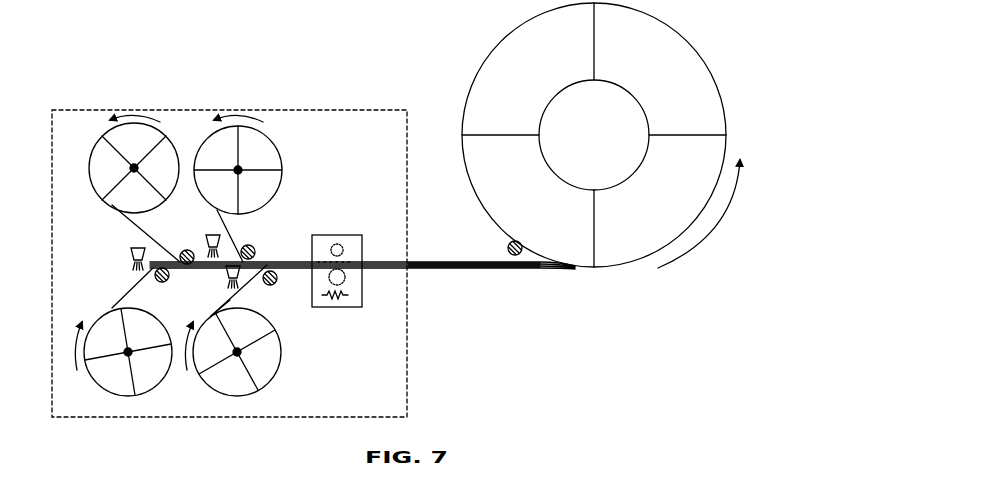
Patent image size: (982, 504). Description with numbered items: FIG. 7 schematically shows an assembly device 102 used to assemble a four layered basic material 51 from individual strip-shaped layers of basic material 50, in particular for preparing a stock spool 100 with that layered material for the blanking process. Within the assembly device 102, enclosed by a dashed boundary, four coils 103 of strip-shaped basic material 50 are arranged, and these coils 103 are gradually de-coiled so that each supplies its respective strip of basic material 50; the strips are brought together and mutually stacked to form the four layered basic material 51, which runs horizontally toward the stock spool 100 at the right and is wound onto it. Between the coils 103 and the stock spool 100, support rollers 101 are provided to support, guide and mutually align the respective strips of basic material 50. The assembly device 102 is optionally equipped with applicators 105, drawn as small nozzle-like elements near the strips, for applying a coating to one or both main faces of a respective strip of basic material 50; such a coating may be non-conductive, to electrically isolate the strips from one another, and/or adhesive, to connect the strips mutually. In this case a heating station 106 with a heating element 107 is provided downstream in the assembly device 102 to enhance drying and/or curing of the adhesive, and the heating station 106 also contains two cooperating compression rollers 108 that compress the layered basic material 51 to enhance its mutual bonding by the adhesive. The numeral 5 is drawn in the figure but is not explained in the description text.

The web 5 is at (218, 312).
The strip-shaped basic material 50 is at (122, 222).
The four layered basic material 51 is at (433, 258).
The stock spool 100 is at (503, 48).
The support rollers 101 is at (182, 251).
The assembly device 102 is at (206, 110).
The coils 103 is at (98, 160).
The applicators 105 is at (132, 260).
The heating station 106 is at (337, 235).
The heating element 107 is at (337, 307).
The compression rollers 108 is at (343, 250).